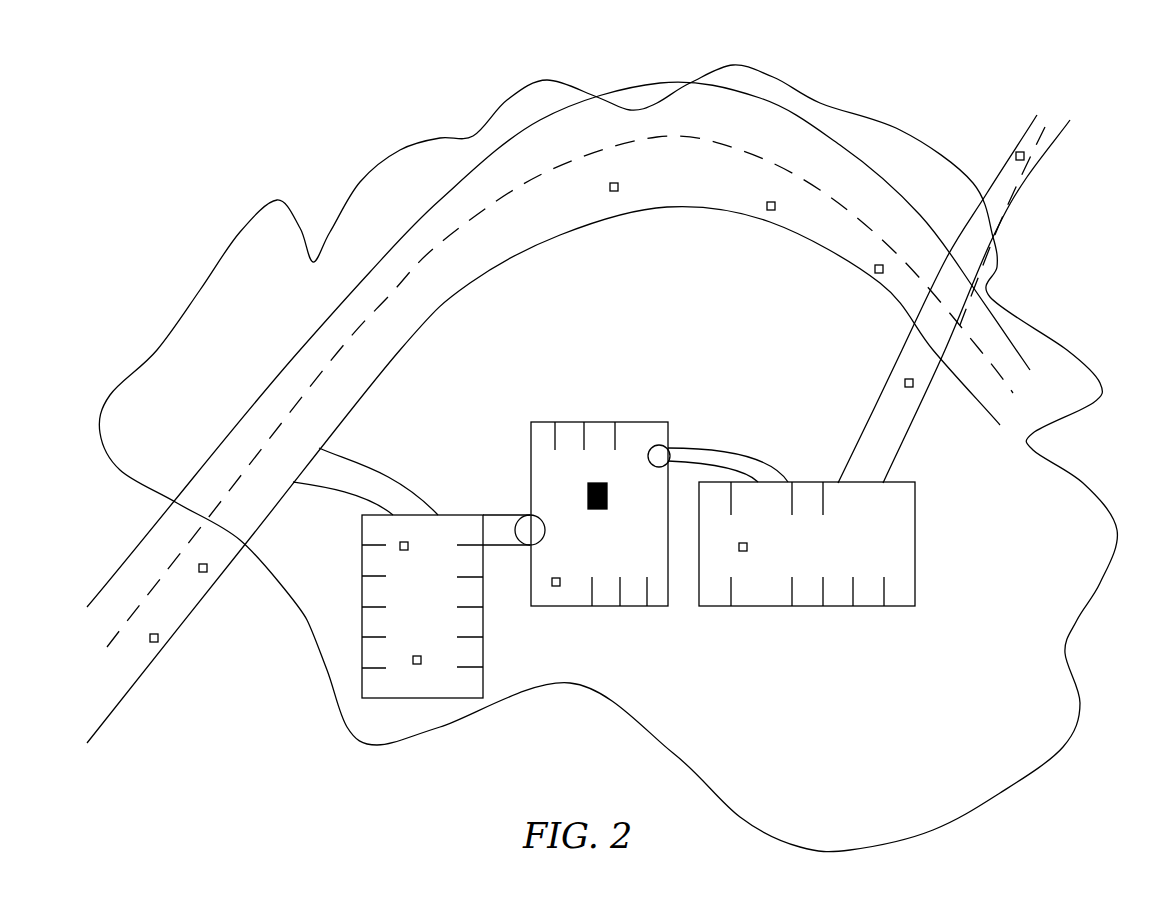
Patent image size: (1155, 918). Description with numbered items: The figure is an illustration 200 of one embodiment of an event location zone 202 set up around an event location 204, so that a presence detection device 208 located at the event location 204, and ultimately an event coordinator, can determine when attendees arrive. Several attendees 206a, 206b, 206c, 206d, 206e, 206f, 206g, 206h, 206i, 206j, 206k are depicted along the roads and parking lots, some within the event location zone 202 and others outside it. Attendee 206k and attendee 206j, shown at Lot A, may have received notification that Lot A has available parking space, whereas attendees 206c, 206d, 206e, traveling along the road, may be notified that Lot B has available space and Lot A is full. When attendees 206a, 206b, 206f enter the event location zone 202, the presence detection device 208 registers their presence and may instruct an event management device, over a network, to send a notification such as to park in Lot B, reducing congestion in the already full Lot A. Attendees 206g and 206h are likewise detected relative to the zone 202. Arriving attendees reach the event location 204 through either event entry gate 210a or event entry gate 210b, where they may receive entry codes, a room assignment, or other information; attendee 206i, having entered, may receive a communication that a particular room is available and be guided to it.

The illustration 200 is at (616, 458).
The event location zone 202 is at (851, 117).
The event location 204 is at (617, 421).
The attendee 206a is at (158, 640).
The attendee 206b is at (207, 570).
The attendee 206c is at (615, 191).
The attendee 206d is at (770, 210).
The attendee 206e is at (877, 273).
The attendee 206f is at (1024, 158).
The attendee 206g is at (913, 385).
The attendee 206h is at (747, 549).
The attendee 206i is at (560, 586).
The attendee 206j is at (413, 663).
The attendee 206k is at (438, 563).
The presence detection device 208 is at (592, 510).
The event entry gate 210a is at (667, 446).
The event entry gate 210b is at (530, 515).